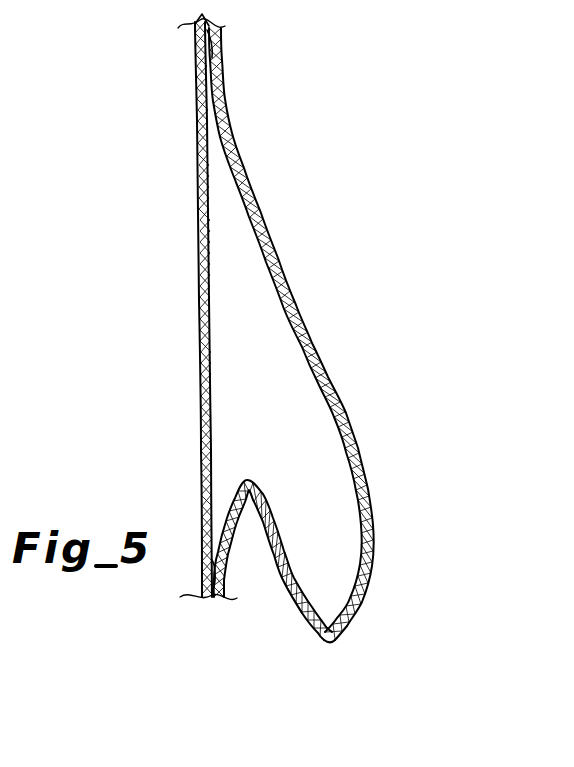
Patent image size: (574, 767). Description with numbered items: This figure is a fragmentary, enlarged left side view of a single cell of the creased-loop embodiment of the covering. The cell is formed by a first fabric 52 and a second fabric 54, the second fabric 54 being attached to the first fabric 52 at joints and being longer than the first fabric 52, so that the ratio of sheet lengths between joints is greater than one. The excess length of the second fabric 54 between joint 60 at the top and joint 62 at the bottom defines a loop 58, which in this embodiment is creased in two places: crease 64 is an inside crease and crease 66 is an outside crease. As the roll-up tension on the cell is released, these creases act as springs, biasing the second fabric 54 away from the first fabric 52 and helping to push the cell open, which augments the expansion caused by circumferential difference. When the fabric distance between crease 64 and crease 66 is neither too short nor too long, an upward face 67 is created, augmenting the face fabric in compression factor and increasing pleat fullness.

The first fabric 52 is at (200, 287).
The second fabric 54 is at (295, 300).
The loop 58 is at (383, 457).
The joint 60 is at (222, 42).
The joint 62 is at (201, 581).
The inside crease 64 is at (248, 483).
The outside crease 66 is at (330, 641).
The upward face 67 is at (292, 613).